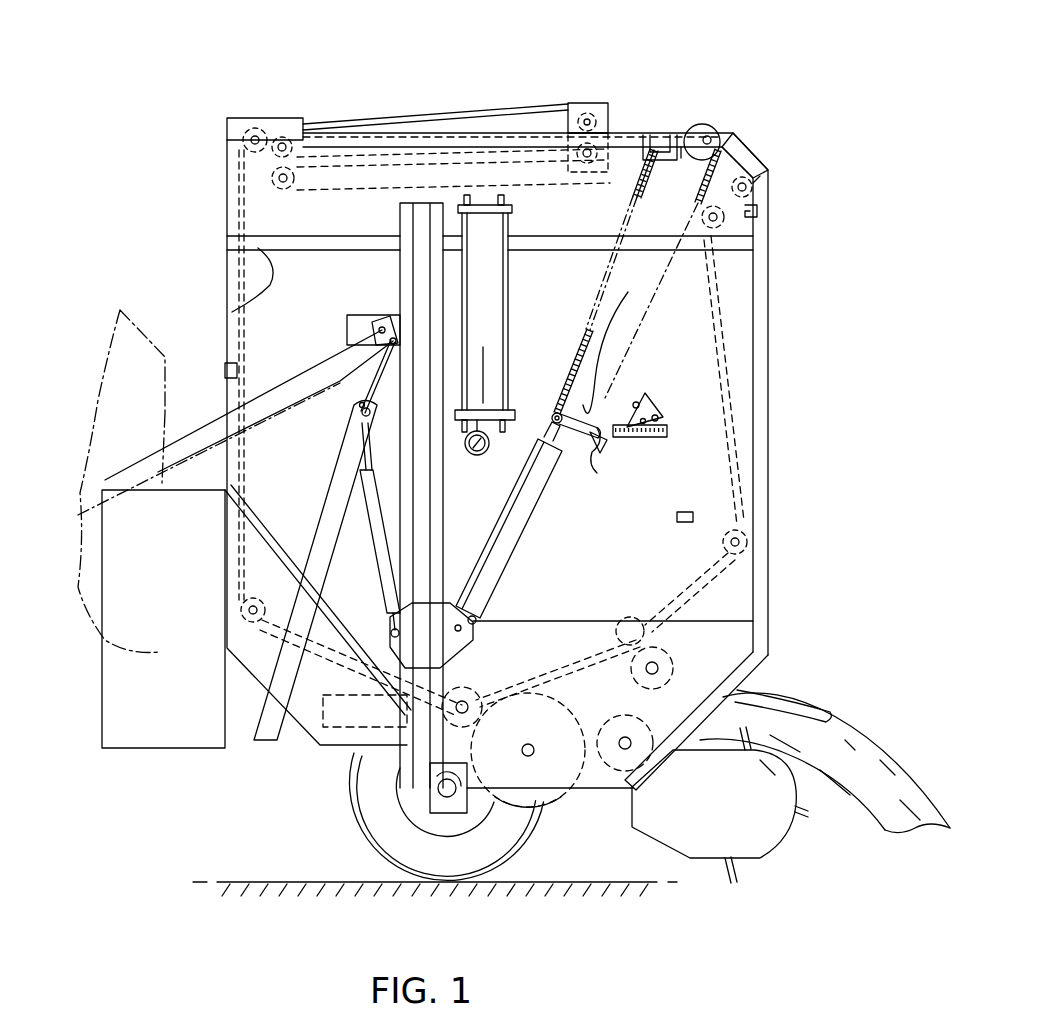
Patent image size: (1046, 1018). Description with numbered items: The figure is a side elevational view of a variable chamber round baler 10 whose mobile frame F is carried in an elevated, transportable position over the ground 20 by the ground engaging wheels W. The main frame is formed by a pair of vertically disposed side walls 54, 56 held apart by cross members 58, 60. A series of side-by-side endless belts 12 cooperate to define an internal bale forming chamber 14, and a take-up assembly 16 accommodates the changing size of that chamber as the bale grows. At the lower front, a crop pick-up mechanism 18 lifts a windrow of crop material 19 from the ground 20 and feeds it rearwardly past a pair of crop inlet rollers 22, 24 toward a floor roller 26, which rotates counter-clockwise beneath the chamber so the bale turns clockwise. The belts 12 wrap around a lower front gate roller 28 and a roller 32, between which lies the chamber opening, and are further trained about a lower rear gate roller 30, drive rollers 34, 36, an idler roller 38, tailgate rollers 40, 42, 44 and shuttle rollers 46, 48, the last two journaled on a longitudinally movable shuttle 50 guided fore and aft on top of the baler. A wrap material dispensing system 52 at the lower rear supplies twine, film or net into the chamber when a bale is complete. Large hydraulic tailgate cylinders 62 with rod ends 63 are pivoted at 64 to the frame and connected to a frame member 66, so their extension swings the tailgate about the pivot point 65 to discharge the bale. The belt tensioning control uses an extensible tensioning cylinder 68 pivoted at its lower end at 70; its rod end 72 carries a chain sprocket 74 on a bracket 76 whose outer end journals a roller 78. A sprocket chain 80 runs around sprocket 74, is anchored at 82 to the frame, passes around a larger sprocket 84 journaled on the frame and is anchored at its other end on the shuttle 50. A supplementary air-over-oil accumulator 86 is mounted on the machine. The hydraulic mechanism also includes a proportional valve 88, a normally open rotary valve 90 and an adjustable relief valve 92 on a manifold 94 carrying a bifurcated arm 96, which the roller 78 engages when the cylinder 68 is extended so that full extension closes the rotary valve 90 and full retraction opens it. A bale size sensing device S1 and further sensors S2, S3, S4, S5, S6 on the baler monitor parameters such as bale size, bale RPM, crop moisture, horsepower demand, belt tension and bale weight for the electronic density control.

The variable chamber round baler 10 is at (562, 76).
The endless belts 12 is at (483, 180).
The bale forming chamber 14 is at (538, 656).
The take-up assembly 16 is at (553, 206).
The crop pick-up mechanism 18 is at (755, 828).
The crop material 19 is at (833, 748).
The ground 20 is at (650, 887).
The crop inlet roller 22 is at (665, 650).
The crop inlet roller 24 is at (620, 760).
The floor roller 26 is at (563, 793).
The lower front gate roller 28 is at (468, 693).
The lower rear gate roller 30 is at (258, 597).
The roller 32 is at (640, 618).
The drive roller 34 is at (747, 543).
The drive roller 36 is at (748, 190).
The idler roller 38 is at (722, 230).
The tailgate roller 40 is at (284, 184).
The tailgate roller 42 is at (318, 128).
The tailgate roller 44 is at (262, 132).
The shuttle roller 46 is at (596, 130).
The shuttle roller 48 is at (598, 150).
The shuttle 50 is at (582, 110).
The wrap material dispensing system 52 is at (167, 722).
The side wall 54 is at (340, 294).
The side wall 56 is at (247, 270).
The cross member 58 is at (752, 161).
The cross member 60 is at (748, 668).
The hydraulic tailgate cylinder 62 is at (387, 540).
The rod end 63 is at (385, 463).
The pivot 64 is at (390, 632).
The pivot point 65 is at (386, 320).
The frame member 66 is at (333, 467).
The tensioning cylinder 68 is at (527, 520).
The pivot 70 is at (478, 618).
The rod end 72 is at (547, 437).
The chain sprocket 74 is at (588, 347).
The bracket 76 is at (553, 415).
The roller 78 is at (597, 462).
The sprocket chain 80 is at (634, 332).
The anchor 82 is at (640, 172).
The larger sprocket 84 is at (713, 138).
The supplementary accumulator 86 is at (480, 307).
The proportional valve 88 is at (660, 413).
The rotary valve 90 is at (665, 431).
The adjustable relief valve 92 is at (613, 343).
The manifold 94 is at (620, 391).
The bifurcated arm 96 is at (606, 450).
The mobile frame F is at (768, 338).
The ground engaging wheels W is at (373, 802).
The bale size sensing device S1 is at (225, 371).
The sensor S2 is at (681, 152).
The sensor S3 is at (758, 212).
The sensor S4 is at (767, 171).
The sensor S5 is at (693, 516).
The sensor S6 is at (470, 803).